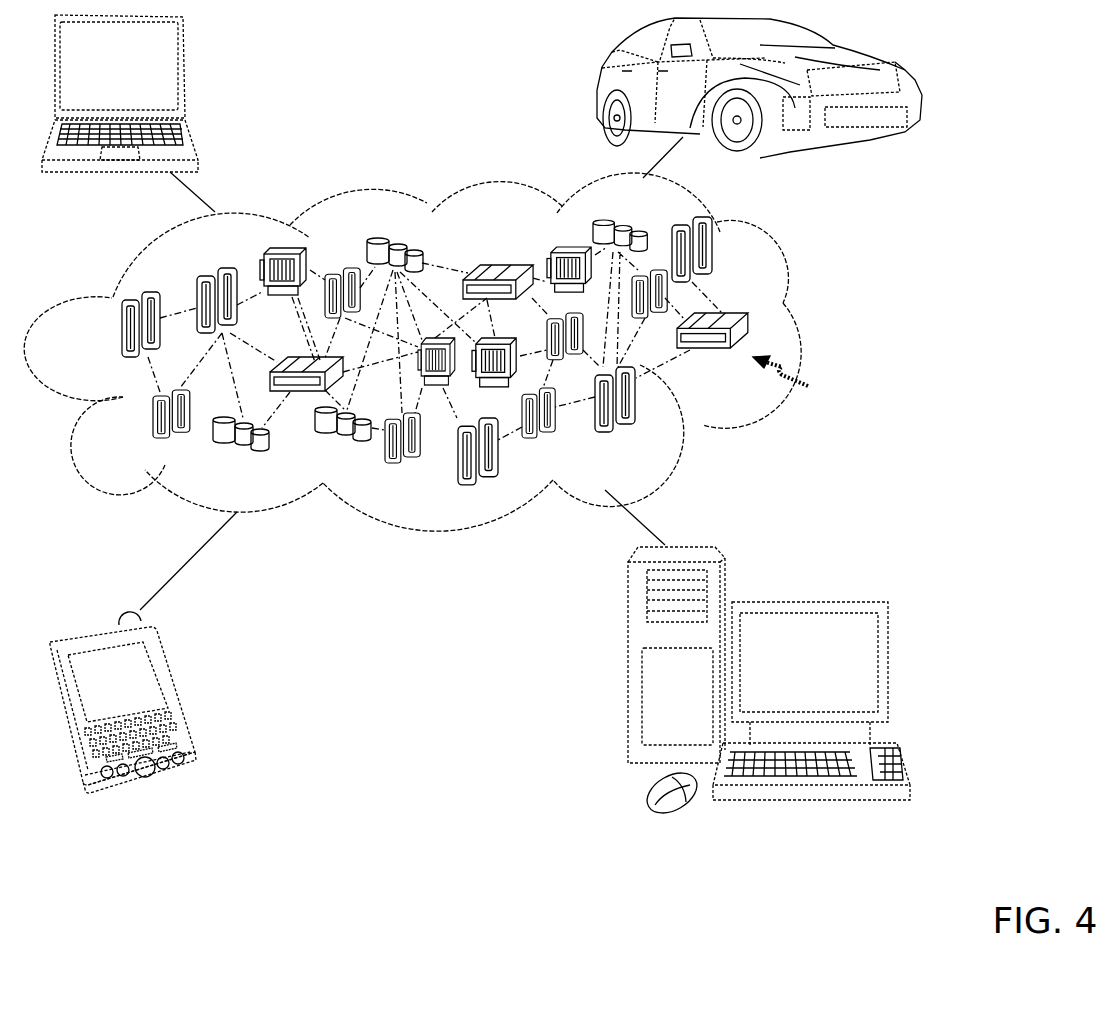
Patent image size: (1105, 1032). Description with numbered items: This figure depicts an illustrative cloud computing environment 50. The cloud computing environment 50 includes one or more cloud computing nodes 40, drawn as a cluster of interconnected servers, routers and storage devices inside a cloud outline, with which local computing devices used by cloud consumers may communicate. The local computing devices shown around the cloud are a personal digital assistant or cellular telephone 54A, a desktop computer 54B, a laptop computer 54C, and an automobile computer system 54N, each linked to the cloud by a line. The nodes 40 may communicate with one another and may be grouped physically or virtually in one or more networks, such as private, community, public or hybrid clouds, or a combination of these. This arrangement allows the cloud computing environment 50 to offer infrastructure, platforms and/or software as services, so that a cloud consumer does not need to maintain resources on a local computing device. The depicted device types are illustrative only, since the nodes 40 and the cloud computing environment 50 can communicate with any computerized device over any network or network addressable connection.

The laptop computer 54C is at (185, 73).
The automobile computer system 54N is at (597, 88).
The personal digital assistant (PDA) or cellular telephone 54A is at (178, 690).
The desktop computer 54B is at (808, 602).
The cloud computing environment 50 is at (805, 328).
The cloud computing nodes 40 is at (800, 379).